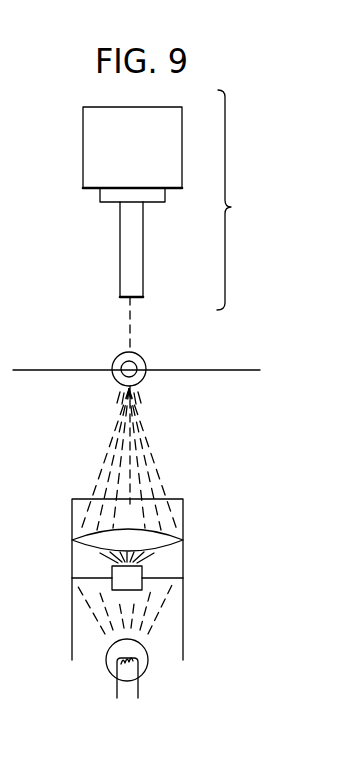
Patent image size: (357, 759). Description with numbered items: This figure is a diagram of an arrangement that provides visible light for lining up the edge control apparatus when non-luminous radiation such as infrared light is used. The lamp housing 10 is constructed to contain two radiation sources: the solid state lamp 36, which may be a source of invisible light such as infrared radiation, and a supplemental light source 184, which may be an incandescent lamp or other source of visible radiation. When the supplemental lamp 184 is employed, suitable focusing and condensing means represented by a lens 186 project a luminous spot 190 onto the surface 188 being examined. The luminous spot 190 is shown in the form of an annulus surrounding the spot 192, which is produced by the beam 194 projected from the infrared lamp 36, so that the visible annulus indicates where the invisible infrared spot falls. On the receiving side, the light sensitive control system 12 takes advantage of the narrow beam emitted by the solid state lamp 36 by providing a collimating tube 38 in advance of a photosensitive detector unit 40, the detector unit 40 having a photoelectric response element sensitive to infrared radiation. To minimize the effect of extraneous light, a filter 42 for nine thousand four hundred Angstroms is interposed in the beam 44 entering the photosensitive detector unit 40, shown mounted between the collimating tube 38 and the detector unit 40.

The lamp housing 10 is at (72, 612).
The light sensitive control system 12 is at (239, 200).
The solid state lamp 36 is at (142, 585).
The collimating tube 38 is at (125, 258).
The photosensitive detector unit 40 is at (90, 141).
The filter 42 is at (100, 192).
The beam 44 is at (128, 323).
The supplemental light source 184 is at (147, 665).
The lens 186 is at (165, 540).
The surface 188 is at (236, 368).
The luminous spot 190 is at (143, 361).
The spot 192 is at (136, 372).
The beam 194 is at (128, 440).